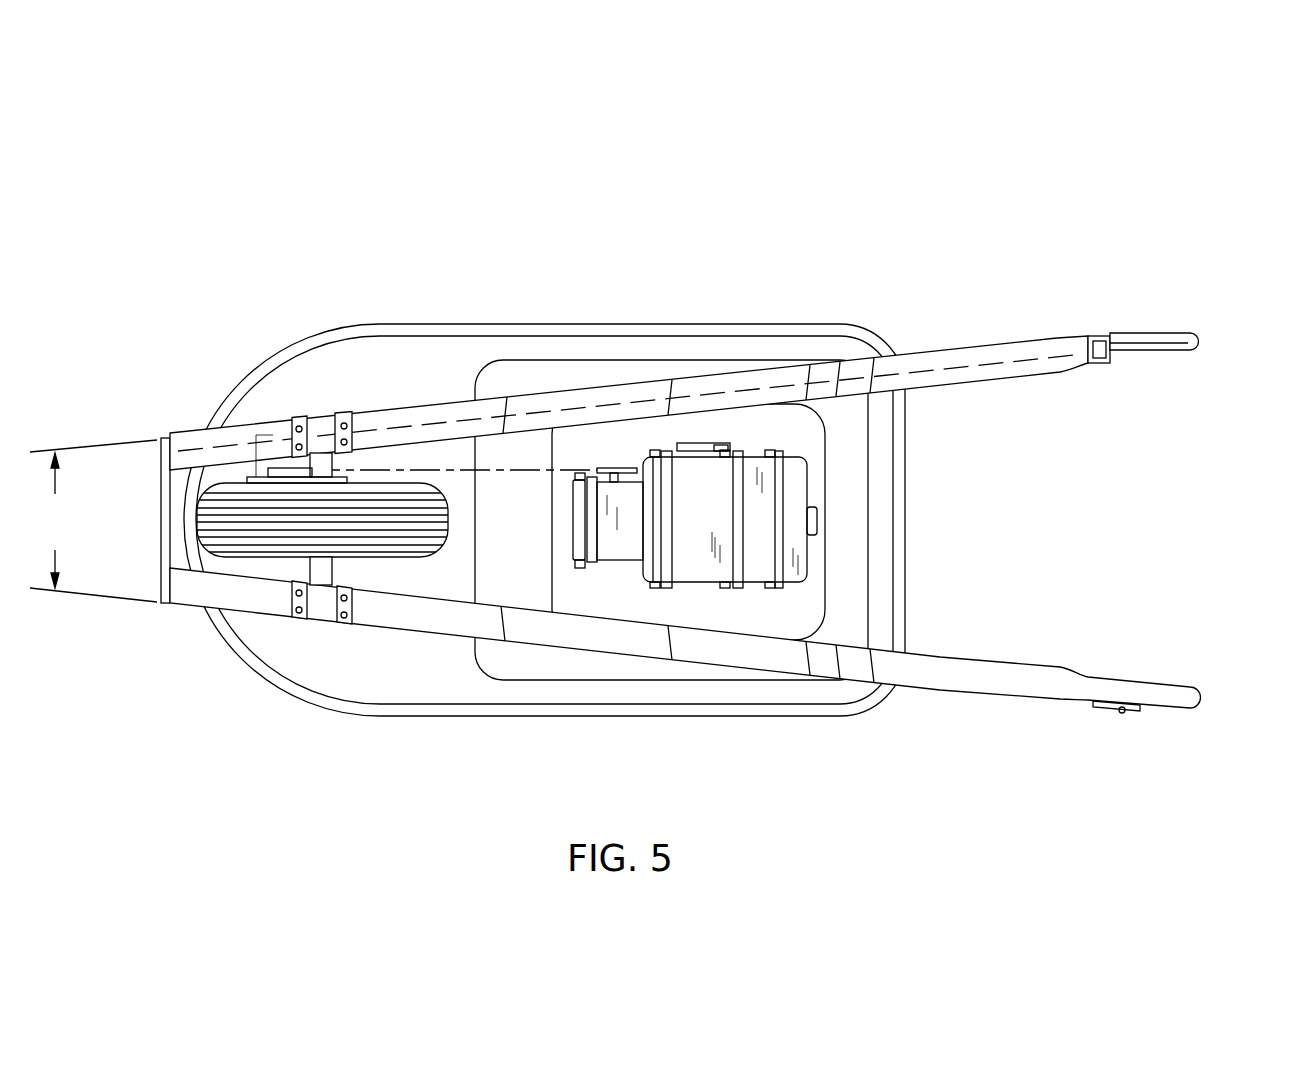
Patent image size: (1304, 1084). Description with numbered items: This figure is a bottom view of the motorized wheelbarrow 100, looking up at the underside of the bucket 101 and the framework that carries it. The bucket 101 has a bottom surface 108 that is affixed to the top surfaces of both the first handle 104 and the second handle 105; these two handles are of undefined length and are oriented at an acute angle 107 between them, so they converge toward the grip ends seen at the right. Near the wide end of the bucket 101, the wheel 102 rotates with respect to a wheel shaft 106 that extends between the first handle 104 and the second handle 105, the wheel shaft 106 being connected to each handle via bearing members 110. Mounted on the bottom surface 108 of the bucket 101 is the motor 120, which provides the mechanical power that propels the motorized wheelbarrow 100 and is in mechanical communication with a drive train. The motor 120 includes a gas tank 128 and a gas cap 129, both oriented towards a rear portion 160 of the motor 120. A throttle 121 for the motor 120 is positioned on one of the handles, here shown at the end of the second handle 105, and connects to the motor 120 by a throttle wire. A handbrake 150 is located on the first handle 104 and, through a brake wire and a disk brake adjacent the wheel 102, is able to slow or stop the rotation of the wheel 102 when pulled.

The motorized wheelbarrow 100 is at (897, 181).
The bucket 101 is at (397, 350).
The wheel 102 is at (232, 540).
The first handle 104 is at (1157, 333).
The second handle 105 is at (1193, 698).
The wheel shaft 106 is at (327, 570).
The acute angle 107 is at (93, 521).
The bottom surface 108 is at (767, 430).
The bearing members 110 is at (320, 603).
The motor 120 is at (708, 540).
The throttle 121 is at (1108, 708).
The gas tank 128 is at (817, 522).
The gas cap 129 is at (797, 475).
The handbrake 150 is at (1183, 343).
The rear portion 160 is at (743, 523).